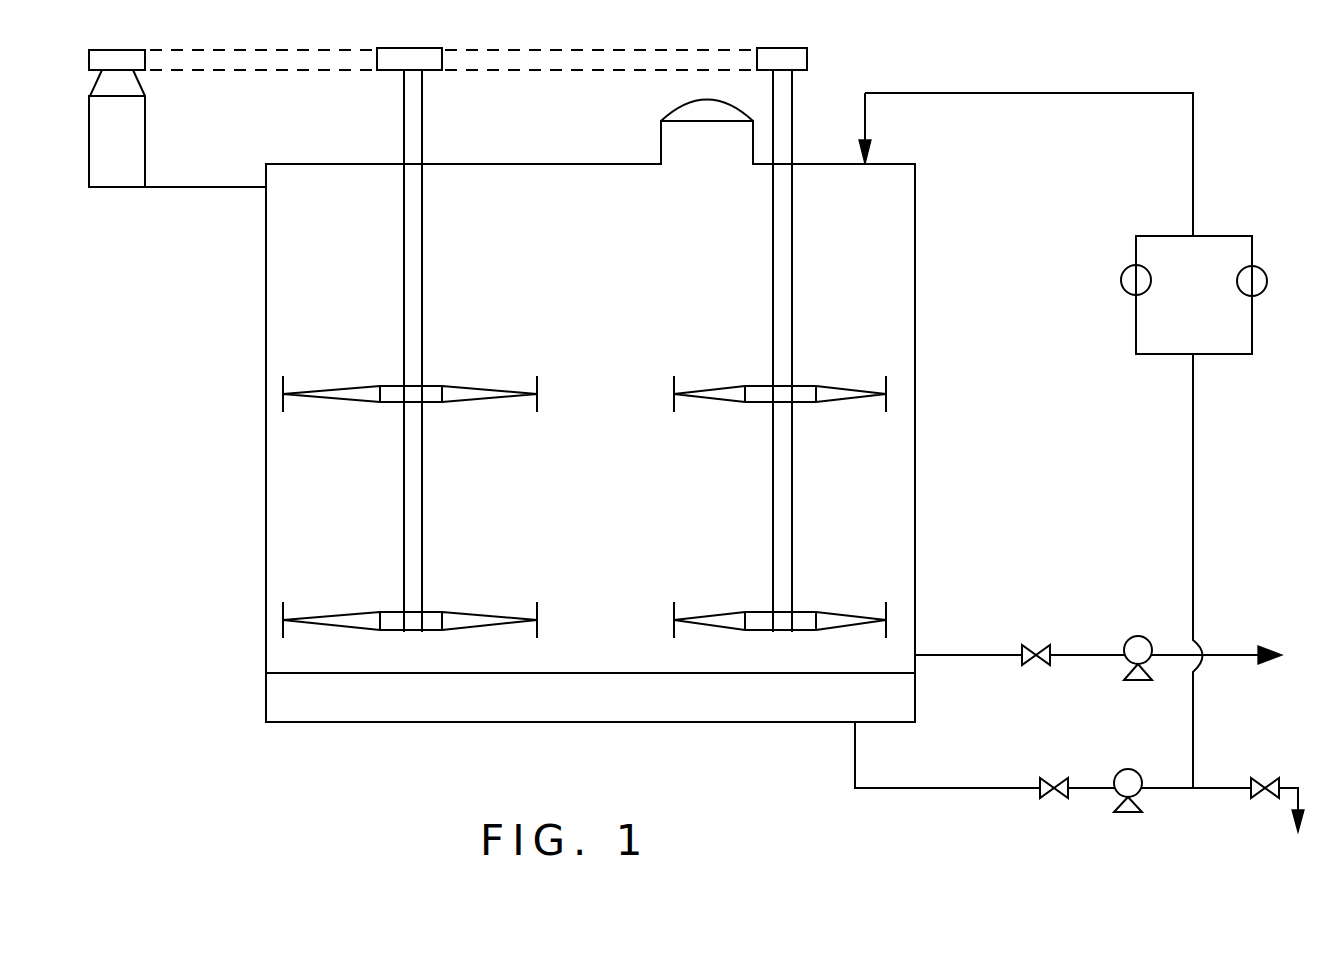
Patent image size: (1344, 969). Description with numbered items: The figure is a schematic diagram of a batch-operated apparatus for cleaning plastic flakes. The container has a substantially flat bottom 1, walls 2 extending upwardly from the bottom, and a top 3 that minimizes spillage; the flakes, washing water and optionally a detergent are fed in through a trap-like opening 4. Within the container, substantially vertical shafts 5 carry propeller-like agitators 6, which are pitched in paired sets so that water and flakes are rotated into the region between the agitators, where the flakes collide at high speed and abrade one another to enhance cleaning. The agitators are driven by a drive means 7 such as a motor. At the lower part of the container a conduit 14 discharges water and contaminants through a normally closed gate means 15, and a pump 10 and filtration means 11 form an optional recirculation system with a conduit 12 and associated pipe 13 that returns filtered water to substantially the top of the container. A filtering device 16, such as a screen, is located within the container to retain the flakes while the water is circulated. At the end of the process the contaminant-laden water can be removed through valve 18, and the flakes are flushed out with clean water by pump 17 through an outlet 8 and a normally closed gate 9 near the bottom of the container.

The flat bottom 1 is at (724, 722).
The walls 2 is at (265, 541).
The top 3 is at (556, 164).
The trap-like opening 4 is at (706, 101).
The shaft 5 is at (424, 471).
The agitators 6 is at (674, 394).
The drive means 7 is at (124, 150).
The outlet 8 is at (970, 655).
The normally closed gate 9 is at (1034, 645).
The pump 10 is at (1133, 809).
The filtration means 11 is at (1128, 292).
The conduit 12 is at (1076, 93).
The pipe 13 is at (1260, 666).
The conduit 14 is at (894, 788).
The normally closed gate means 15 is at (1056, 806).
The filtering device 16 is at (297, 677).
The pump 17 is at (1141, 676).
The valve 18 is at (1268, 770).